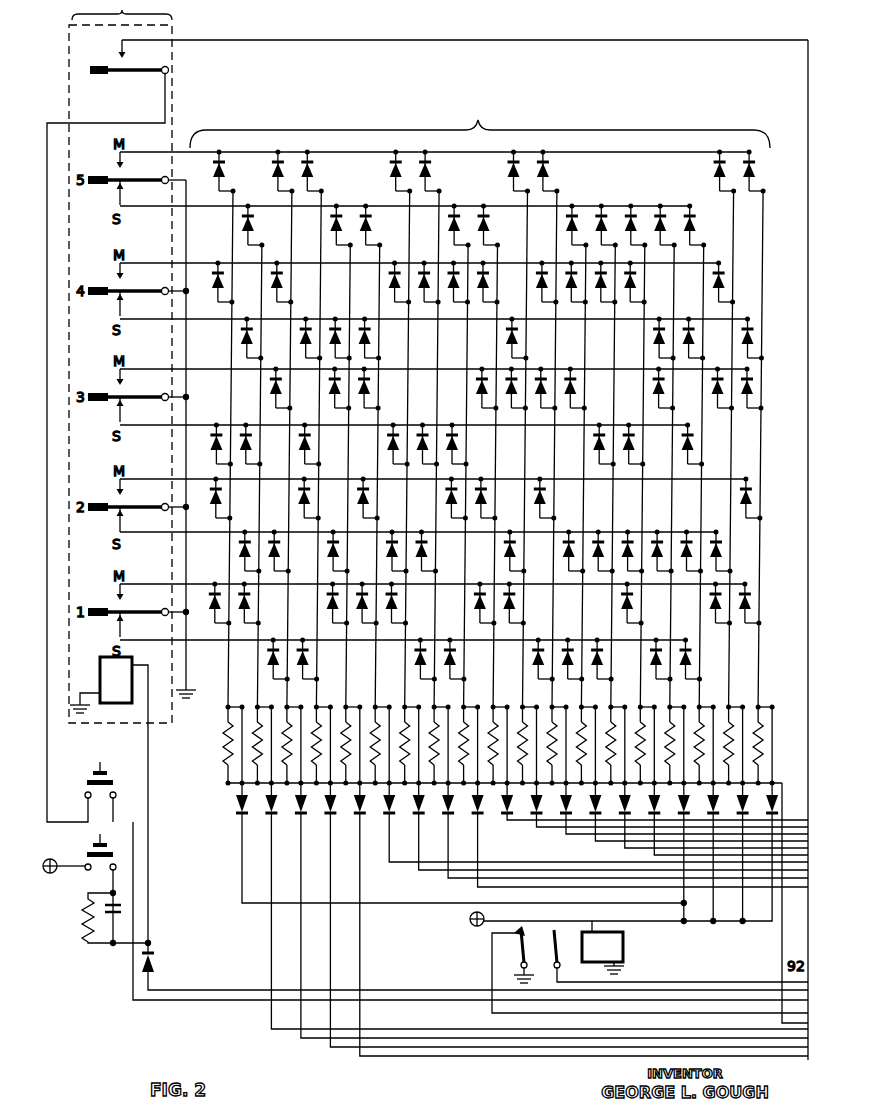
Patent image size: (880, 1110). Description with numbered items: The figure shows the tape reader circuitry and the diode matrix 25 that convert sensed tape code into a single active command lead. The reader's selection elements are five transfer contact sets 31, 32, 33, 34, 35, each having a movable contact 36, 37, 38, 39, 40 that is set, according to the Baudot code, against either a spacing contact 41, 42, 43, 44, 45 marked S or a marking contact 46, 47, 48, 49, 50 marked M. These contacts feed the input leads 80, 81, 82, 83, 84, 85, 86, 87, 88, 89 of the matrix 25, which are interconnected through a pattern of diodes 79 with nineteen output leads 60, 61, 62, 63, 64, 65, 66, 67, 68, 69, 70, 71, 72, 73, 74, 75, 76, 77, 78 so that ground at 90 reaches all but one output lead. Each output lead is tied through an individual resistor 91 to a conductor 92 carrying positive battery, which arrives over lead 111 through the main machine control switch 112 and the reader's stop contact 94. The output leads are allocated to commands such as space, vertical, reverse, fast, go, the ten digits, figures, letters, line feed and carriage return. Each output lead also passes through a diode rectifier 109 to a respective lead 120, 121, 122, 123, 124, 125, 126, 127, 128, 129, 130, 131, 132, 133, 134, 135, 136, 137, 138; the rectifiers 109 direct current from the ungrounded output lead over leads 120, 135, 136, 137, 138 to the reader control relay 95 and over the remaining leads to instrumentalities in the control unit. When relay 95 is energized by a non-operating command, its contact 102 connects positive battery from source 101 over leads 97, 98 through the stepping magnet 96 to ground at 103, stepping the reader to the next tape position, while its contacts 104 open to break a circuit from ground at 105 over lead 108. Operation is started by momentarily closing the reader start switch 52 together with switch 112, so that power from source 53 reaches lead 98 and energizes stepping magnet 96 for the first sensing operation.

The diode matrix 25 is at (421, 74).
The transfer contact set 31 is at (110, 621).
The transfer contact set 32 is at (110, 516).
The transfer contact set 33 is at (110, 406).
The transfer contact set 34 is at (110, 300).
The transfer contact set 35 is at (110, 189).
The movable contact 36 is at (110, 610).
The movable contact 37 is at (110, 505).
The movable contact 38 is at (110, 395).
The movable contact 39 is at (110, 289).
The movable contact 40 is at (110, 178).
The spacing contact 41 is at (125, 621).
The spacing contact 42 is at (125, 516).
The spacing contact 43 is at (125, 406).
The spacing contact 44 is at (125, 300).
The spacing contact 45 is at (125, 189).
The marking contact 46 is at (125, 597).
The marking contact 47 is at (125, 492).
The marking contact 48 is at (125, 382).
The marking contact 49 is at (125, 276).
The marking contact 50 is at (125, 165).
The reader start switch 52 is at (96, 844).
The power source 53 is at (48, 874).
The output lead 60 is at (228, 696).
The output lead 61 is at (257, 696).
The output lead 62 is at (287, 696).
The output lead 63 is at (316, 696).
The output lead 64 is at (346, 696).
The output lead 65 is at (375, 696).
The output lead 66 is at (405, 696).
The output lead 67 is at (434, 696).
The output lead 68 is at (464, 696).
The output lead 69 is at (493, 696).
The output lead 70 is at (522, 696).
The output lead 71 is at (552, 696).
The output lead 72 is at (581, 696).
The output lead 73 is at (611, 696).
The output lead 74 is at (640, 696).
The output lead 75 is at (670, 696).
The output lead 76 is at (699, 696).
The output lead 77 is at (729, 696).
The output lead 78 is at (758, 696).
The diode 79 is at (314, 170).
The input lead 80 is at (172, 640).
The input lead 81 is at (172, 584).
The input lead 82 is at (172, 532).
The input lead 83 is at (172, 479).
The input lead 84 is at (172, 425).
The input lead 85 is at (172, 369).
The input lead 86 is at (172, 319).
The input lead 87 is at (172, 263).
The input lead 88 is at (172, 206).
The input lead 89 is at (172, 152).
The ground 90 is at (187, 690).
The resistor 91 is at (250, 745).
The conductor 92 is at (806, 104).
The stop contact 94 is at (127, 52).
The reader control relay 95 is at (603, 947).
The stepping magnet 96 is at (116, 680).
The lead 97 is at (630, 982).
The lead 98 is at (150, 889).
The positive battery source 101 is at (470, 920).
The relay contact 102 is at (556, 928).
The ground 103 is at (86, 712).
The relay contacts 104 is at (514, 935).
The ground 105 is at (517, 971).
The lead 108 is at (490, 1012).
The diode rectifier 109 is at (300, 813).
The lead 111 is at (132, 969).
The main machine control switch 112 is at (106, 768).
The lead 120 is at (240, 851).
The lead 121 is at (270, 918).
The lead 122 is at (299, 944).
The lead 123 is at (331, 917).
The lead 124 is at (361, 944).
The lead 125 is at (391, 861).
The lead 126 is at (420, 872).
The lead 127 is at (449, 880).
The lead 128 is at (480, 888).
The lead 129 is at (516, 821).
The lead 130 is at (540, 829).
The lead 131 is at (568, 836).
The lead 132 is at (598, 843).
The lead 133 is at (630, 850).
The lead 134 is at (658, 857).
The lead 135 is at (678, 905).
The lead 136 is at (711, 915).
The lead 137 is at (740, 920).
The lead 138 is at (770, 925).